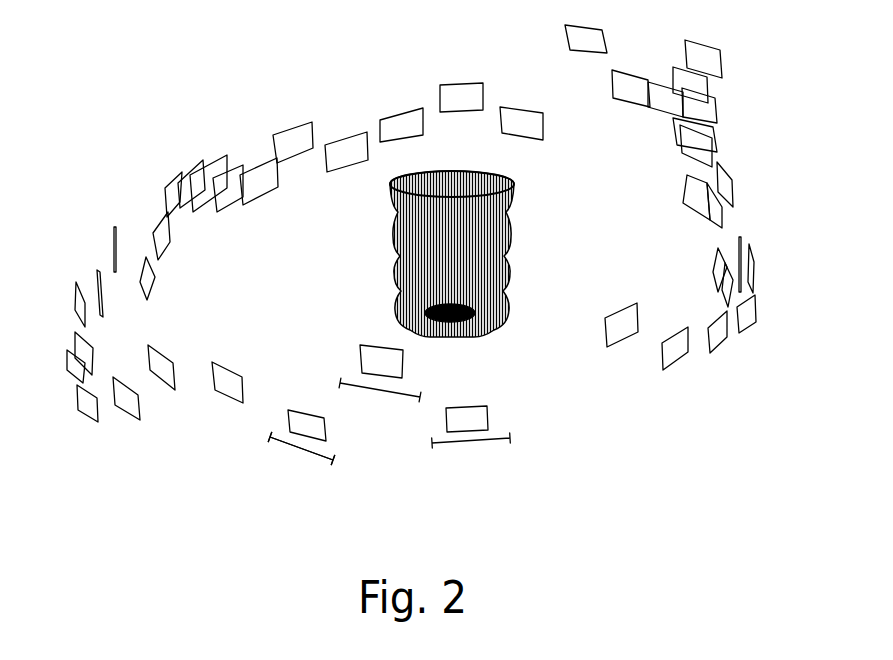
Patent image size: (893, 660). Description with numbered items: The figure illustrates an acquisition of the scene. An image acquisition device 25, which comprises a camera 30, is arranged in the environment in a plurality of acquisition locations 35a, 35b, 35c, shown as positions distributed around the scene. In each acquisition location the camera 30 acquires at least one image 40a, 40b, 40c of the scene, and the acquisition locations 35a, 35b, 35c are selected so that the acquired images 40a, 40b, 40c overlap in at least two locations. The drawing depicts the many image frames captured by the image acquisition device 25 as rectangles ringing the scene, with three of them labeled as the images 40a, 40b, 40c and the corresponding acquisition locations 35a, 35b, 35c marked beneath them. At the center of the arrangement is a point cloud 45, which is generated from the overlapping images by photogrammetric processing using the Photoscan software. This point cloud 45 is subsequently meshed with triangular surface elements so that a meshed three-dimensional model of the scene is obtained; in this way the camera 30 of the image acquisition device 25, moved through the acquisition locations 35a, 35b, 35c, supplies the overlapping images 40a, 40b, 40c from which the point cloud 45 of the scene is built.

The image acquisition device 25 is at (253, 133).
The camera 30 is at (292, 447).
The acquisition location 35a is at (310, 455).
The acquisition location 35b is at (377, 395).
The acquisition location 35c is at (468, 443).
The image 40a is at (308, 420).
The image 40b is at (372, 350).
The image 40c is at (482, 418).
The point cloud 45 is at (508, 232).